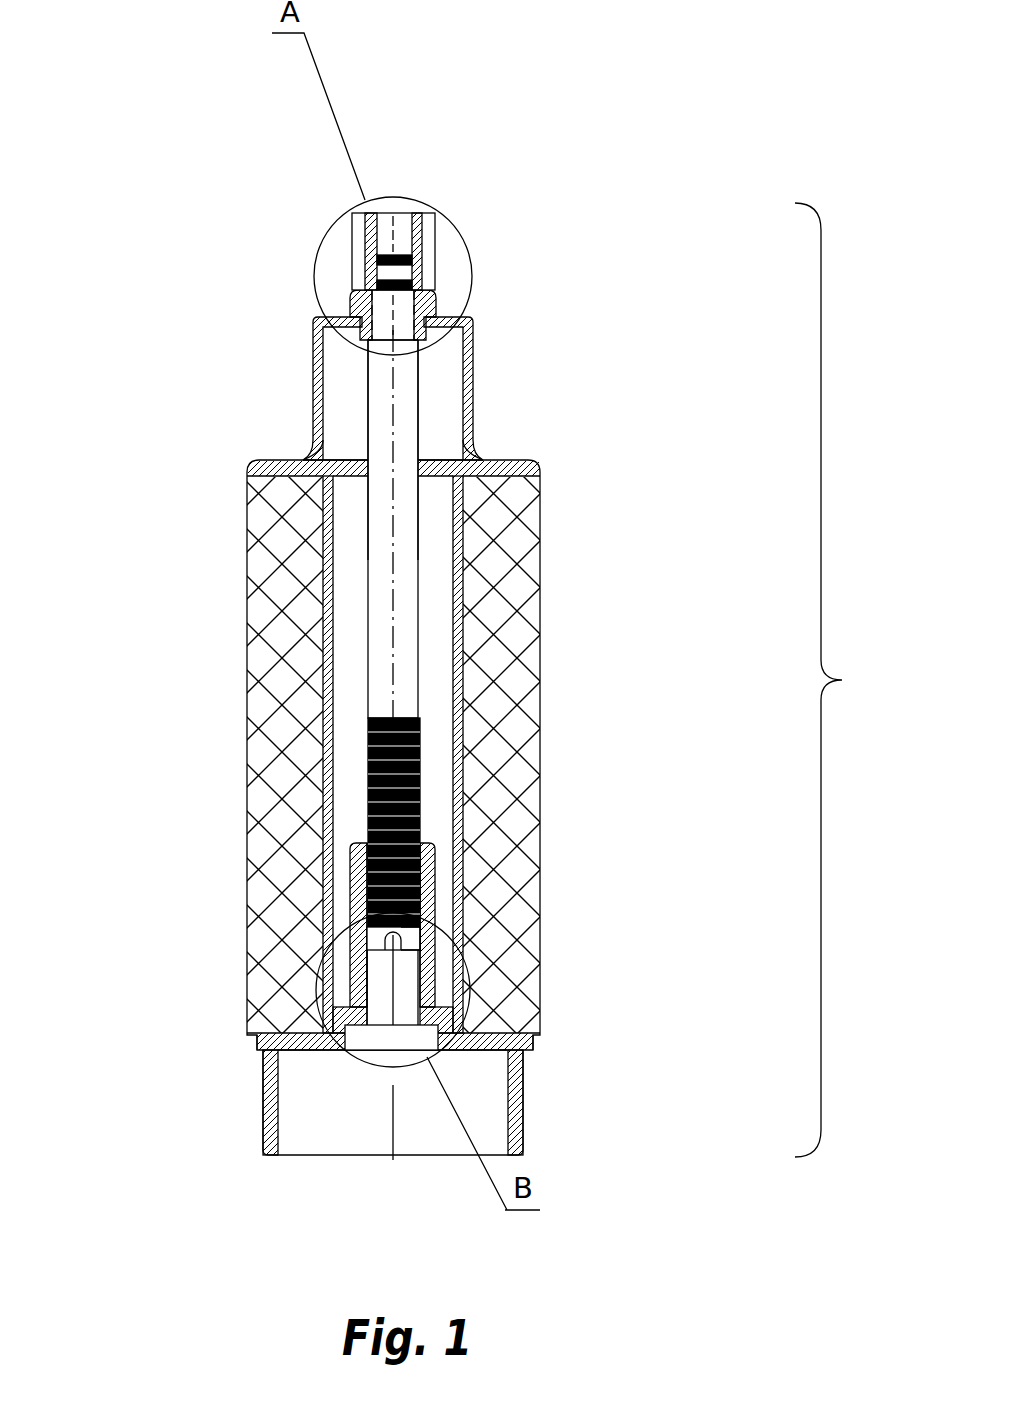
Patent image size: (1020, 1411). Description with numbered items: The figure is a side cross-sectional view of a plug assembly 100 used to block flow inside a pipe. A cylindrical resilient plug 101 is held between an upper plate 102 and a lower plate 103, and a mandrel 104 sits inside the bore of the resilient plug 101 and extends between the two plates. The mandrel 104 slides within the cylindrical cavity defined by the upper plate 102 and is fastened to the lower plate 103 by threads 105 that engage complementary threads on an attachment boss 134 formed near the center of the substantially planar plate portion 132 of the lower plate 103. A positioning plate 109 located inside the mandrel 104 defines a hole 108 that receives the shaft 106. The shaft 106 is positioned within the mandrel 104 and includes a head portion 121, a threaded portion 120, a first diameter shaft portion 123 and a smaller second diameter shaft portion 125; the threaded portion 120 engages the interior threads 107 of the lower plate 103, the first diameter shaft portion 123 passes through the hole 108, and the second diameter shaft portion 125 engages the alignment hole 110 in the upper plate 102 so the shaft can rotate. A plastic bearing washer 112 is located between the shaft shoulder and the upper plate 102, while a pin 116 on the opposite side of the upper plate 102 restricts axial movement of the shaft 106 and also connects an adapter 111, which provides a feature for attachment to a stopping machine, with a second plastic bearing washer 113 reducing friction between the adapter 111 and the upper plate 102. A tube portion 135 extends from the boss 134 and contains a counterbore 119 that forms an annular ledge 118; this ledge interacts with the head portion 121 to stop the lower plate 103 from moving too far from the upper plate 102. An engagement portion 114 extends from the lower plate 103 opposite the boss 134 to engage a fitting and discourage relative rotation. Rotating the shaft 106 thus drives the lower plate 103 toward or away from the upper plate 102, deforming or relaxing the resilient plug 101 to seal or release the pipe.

The plug assembly 100 is at (848, 680).
The cylindrical resilient plug 101 is at (507, 555).
The upper plate 102 is at (522, 460).
The lower plate 103 is at (305, 1043).
The mandrel 104 is at (466, 720).
The threads 105 is at (465, 1013).
The shaft 106 is at (382, 682).
The interior threads 107 is at (358, 878).
The hole 108 is at (320, 440).
The positioning plate 109 is at (472, 440).
The alignment hole 110 is at (433, 305).
The adapter 111 is at (428, 232).
The plastic bearing washer 112 is at (372, 316).
The plastic bearing washer 113 is at (432, 282).
The engagement portion 114 is at (522, 1100).
The pin 116 is at (372, 262).
The annular ledge 118 is at (385, 930).
The counterbore 119 is at (437, 962).
The threaded portion 120 is at (366, 775).
The head portion 121 is at (430, 930).
The first diameter shaft portion 123 is at (383, 563).
The second diameter shaft portion 125 is at (355, 292).
The plate portion 132 is at (536, 1033).
The attachment boss 134 is at (352, 1042).
The tube portion 135 is at (360, 908).